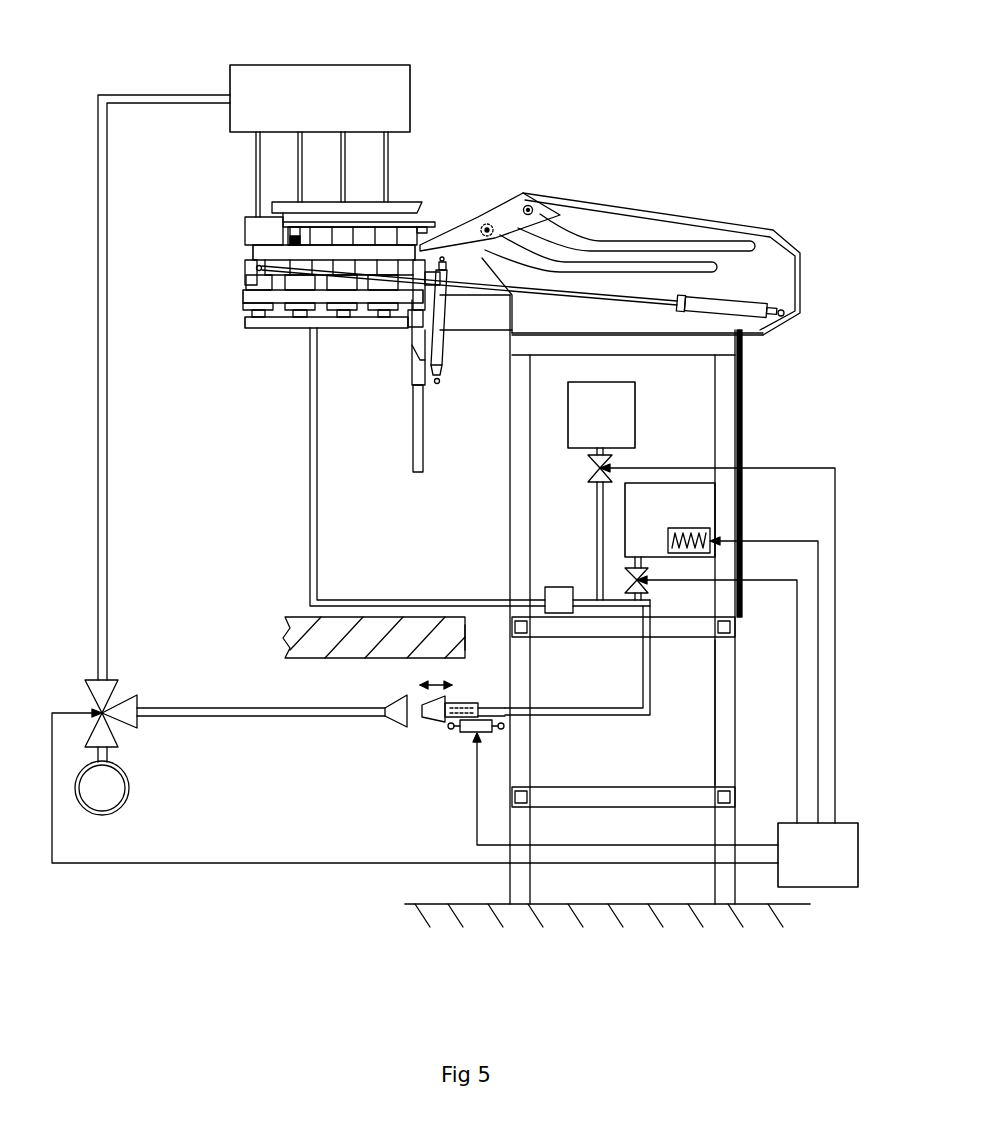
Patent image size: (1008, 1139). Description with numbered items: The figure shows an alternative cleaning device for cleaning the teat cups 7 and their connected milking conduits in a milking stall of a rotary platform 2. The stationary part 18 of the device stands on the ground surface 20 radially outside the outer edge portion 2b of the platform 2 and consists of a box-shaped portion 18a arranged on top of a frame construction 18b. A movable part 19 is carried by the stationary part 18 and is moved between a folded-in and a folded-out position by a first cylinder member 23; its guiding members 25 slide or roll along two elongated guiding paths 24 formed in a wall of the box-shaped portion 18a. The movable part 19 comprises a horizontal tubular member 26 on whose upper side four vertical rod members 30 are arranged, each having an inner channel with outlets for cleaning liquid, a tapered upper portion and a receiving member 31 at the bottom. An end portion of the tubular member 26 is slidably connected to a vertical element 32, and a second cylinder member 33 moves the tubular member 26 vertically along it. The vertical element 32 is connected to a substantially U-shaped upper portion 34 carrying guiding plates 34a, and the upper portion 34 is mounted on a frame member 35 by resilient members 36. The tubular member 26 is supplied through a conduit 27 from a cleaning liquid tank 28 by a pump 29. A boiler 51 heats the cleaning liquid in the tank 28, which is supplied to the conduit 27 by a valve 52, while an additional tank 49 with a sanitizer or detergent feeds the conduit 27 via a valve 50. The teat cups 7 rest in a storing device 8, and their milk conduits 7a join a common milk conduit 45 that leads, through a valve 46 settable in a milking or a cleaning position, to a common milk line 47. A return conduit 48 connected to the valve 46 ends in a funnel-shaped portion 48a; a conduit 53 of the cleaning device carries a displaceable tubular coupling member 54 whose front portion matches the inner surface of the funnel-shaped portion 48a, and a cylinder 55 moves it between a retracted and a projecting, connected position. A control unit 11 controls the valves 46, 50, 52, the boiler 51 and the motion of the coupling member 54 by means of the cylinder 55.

The rotary platform 2 is at (346, 615).
The outer edge portion 2b is at (468, 640).
The teat cups 7 is at (340, 263).
The milk conduits 7a is at (298, 148).
The storing device 8 is at (335, 93).
The control unit 11 is at (820, 867).
The stationary part 18 is at (490, 536).
The box-shaped portion 18a is at (742, 393).
The frame construction 18b is at (723, 707).
The movable part 19 is at (442, 183).
The ground surface 20 is at (635, 905).
The first cylinder member 23 is at (738, 307).
The guiding paths 24 is at (690, 268).
The guiding members 25 is at (493, 224).
The horizontal tubular member 26 is at (267, 322).
The conduit 27 is at (316, 522).
The cleaning liquid tank 28 is at (663, 493).
The pump 29 is at (560, 598).
The vertical rod members 30 is at (300, 282).
The receiving member 31 is at (297, 315).
The vertical element 32 is at (422, 428).
The second cylinder member 33 is at (440, 323).
The U-shaped upper portion 34 is at (363, 218).
The guiding plates 34a is at (405, 207).
The frame member 35 is at (257, 250).
The resilient members 36 is at (288, 228).
The common milk conduit 45 is at (108, 518).
The valve 46 is at (108, 690).
The common milk line 47 is at (112, 790).
The return conduit 48 is at (218, 712).
The funnel-shaped portion 48a is at (405, 697).
The additional tank 49 is at (608, 405).
The valve 50 is at (600, 474).
The boiler 51 is at (703, 538).
The valve 52 is at (634, 598).
The conduit 53 is at (617, 712).
The tubular coupling member 54 is at (443, 702).
The cylinder 55 is at (470, 731).